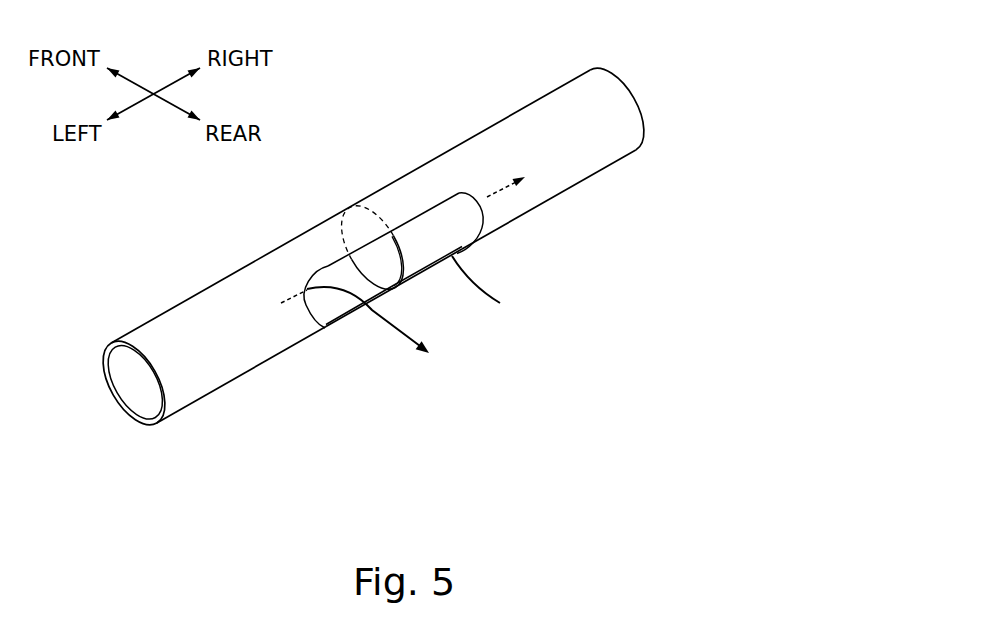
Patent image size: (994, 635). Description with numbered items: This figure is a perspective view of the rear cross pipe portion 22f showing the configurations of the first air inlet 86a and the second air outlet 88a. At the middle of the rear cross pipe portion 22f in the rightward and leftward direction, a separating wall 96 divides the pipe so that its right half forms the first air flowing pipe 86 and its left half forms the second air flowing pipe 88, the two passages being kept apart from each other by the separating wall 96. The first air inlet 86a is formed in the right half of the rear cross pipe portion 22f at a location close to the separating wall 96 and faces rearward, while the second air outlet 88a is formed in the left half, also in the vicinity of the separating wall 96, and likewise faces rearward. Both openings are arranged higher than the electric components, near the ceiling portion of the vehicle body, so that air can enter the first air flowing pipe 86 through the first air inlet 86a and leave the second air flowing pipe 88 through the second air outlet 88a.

The rear cross pipe portion 22f is at (525, 128).
The first air flowing pipe 86 is at (623, 165).
The first air inlet 86a is at (465, 221).
The second air flowing pipe 88 is at (197, 413).
The second air outlet 88a is at (323, 313).
The separating wall 96 is at (390, 255).